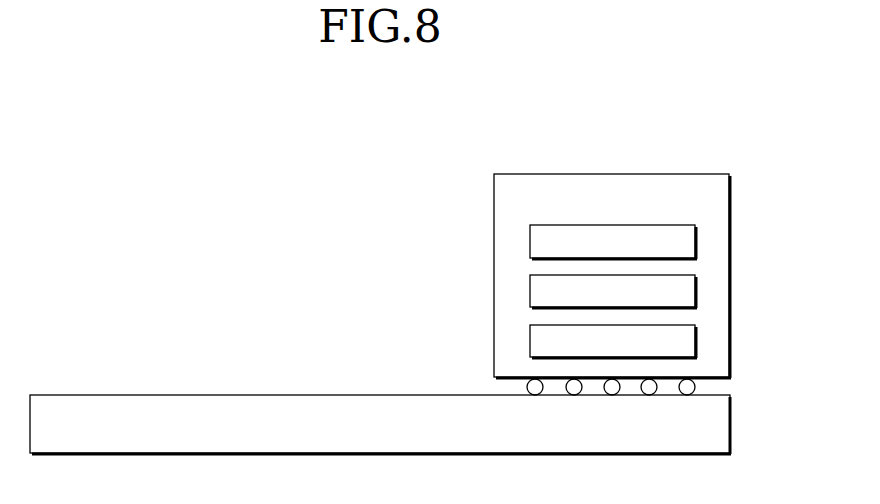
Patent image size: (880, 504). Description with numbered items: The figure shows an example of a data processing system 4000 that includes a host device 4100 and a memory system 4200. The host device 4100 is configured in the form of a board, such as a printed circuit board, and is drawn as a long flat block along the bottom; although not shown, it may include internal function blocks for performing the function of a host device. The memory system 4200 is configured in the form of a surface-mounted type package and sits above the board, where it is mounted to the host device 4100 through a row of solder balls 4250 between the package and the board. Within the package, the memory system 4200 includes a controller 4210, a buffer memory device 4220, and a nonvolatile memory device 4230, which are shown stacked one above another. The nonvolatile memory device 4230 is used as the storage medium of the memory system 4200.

The data processing system 4000 is at (122, 142).
The host device 4100 is at (380, 424).
The memory system 4200 is at (612, 276).
The controller 4210 is at (613, 242).
The buffer memory device 4220 is at (613, 291).
The nonvolatile memory device 4230 is at (613, 341).
The solder balls 4250 is at (708, 387).